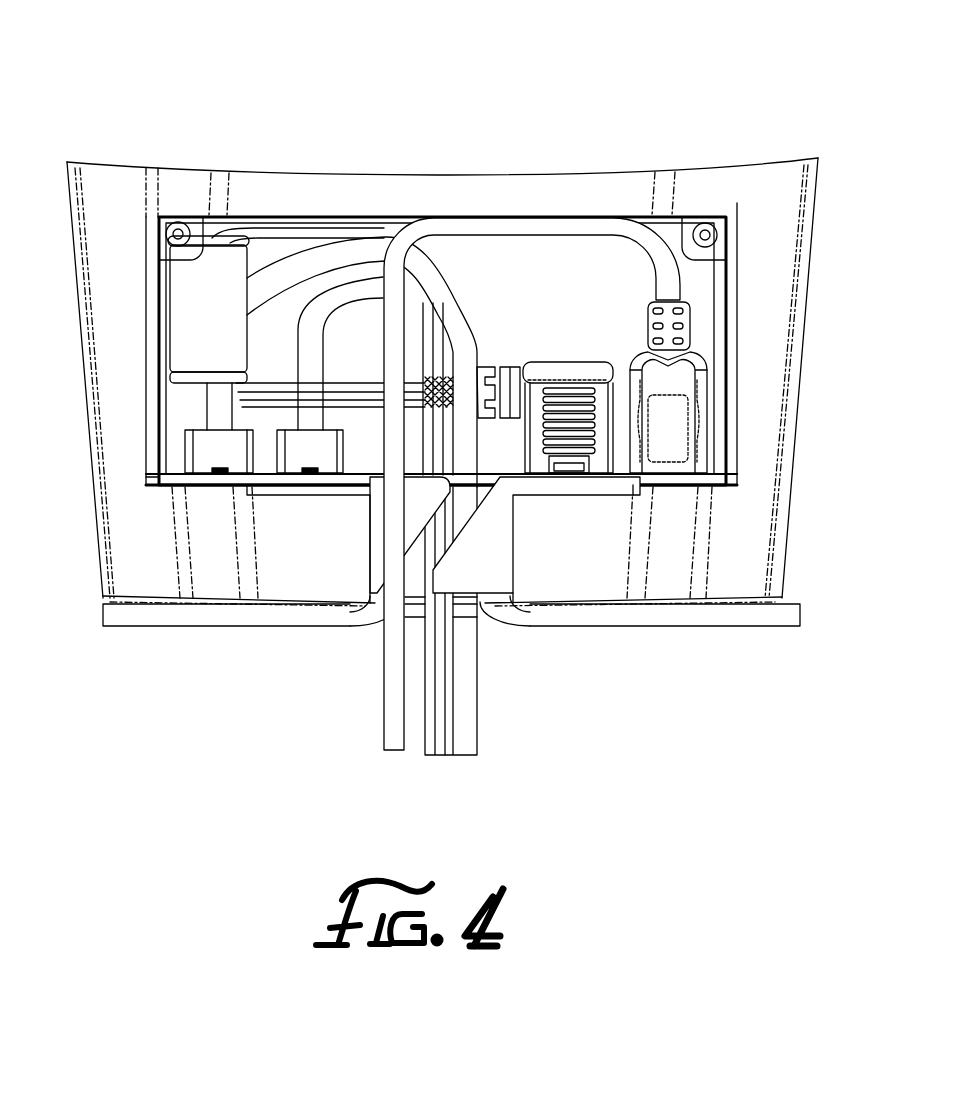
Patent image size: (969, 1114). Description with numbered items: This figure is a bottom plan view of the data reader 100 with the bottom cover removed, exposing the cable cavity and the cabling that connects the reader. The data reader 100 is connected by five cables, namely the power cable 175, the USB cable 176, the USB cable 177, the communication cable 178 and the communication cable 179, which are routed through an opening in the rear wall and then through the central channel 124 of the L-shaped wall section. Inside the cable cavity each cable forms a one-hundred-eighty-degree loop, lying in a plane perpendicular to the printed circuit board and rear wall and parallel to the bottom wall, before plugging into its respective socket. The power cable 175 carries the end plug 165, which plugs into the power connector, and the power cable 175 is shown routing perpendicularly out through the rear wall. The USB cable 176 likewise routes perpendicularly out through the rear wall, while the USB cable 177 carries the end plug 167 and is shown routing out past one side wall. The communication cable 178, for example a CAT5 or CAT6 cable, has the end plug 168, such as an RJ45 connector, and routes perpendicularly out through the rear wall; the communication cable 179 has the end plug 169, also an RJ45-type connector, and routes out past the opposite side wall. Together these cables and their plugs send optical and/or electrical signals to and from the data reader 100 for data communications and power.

The data reader 100 is at (230, 77).
The central channel 124 is at (488, 567).
The end plug 165 is at (565, 378).
The end plug 167 is at (675, 378).
The end plug 168 is at (323, 458).
The end plug 169 is at (202, 452).
The power cable 175 is at (440, 757).
The USB cable 176 is at (395, 715).
The USB cable 177 is at (152, 614).
The communication cable 178 is at (463, 717).
The communication cable 179 is at (753, 615).